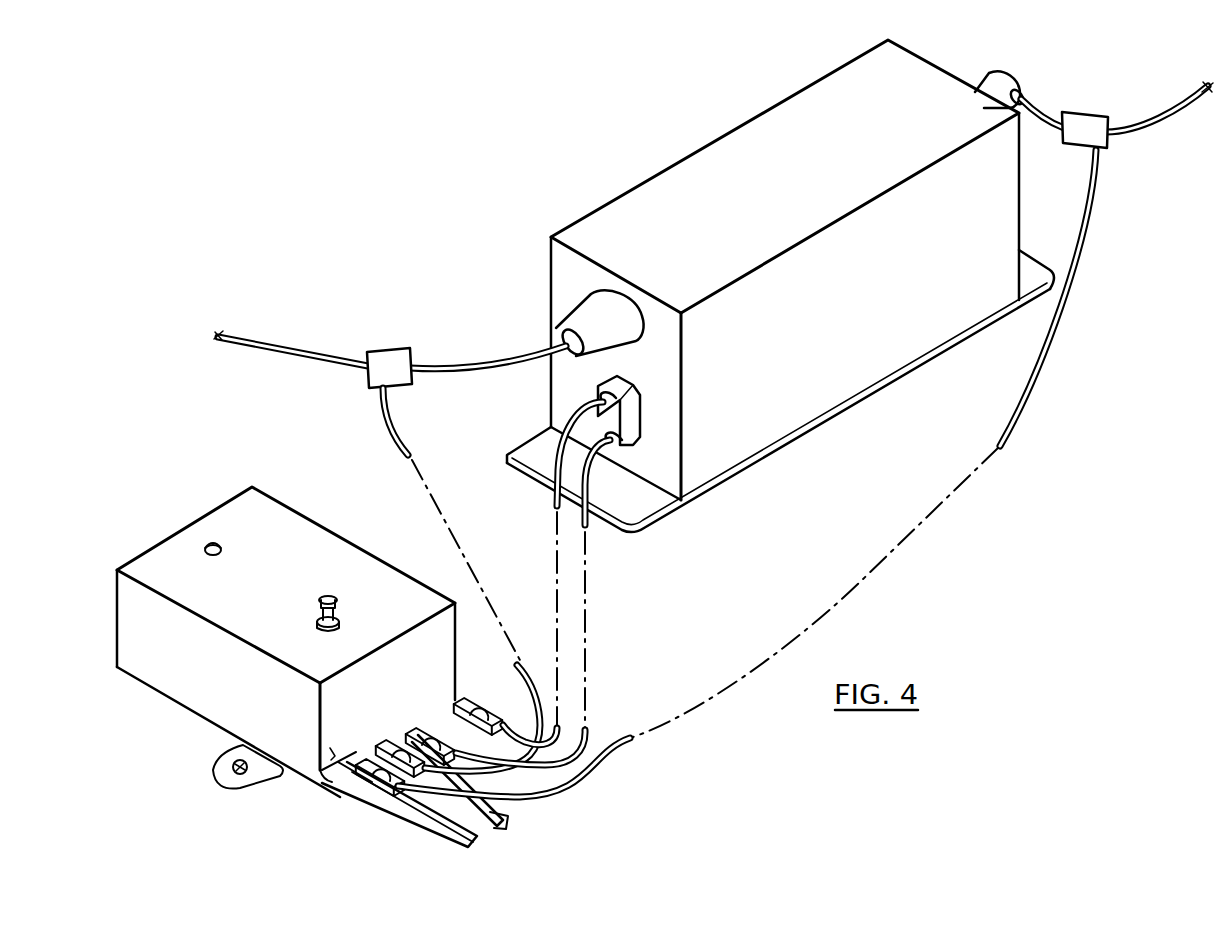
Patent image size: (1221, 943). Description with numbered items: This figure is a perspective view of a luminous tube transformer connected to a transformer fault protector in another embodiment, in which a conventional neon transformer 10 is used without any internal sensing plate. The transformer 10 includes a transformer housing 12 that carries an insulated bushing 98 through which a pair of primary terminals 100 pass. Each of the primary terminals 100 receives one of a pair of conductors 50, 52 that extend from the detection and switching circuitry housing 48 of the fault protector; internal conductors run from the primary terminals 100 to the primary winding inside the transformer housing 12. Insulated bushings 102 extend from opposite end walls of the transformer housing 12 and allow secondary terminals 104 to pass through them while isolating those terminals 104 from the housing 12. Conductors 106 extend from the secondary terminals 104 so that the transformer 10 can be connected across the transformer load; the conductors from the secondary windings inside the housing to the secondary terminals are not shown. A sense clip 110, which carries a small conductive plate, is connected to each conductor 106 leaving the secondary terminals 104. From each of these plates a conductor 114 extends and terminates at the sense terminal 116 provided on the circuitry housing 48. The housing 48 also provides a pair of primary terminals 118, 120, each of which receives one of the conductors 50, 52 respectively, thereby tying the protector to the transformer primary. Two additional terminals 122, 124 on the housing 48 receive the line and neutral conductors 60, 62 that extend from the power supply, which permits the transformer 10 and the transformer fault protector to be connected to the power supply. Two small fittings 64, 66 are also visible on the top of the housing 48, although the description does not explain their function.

The neon transformer 10 is at (645, 126).
The transformer housing 12 is at (885, 347).
The detection and switching circuitry housing 48 is at (166, 682).
The conductor 50 is at (562, 478).
The conductor 52 is at (592, 488).
The line conductor 60 is at (436, 824).
The neutral conductor 62 is at (498, 822).
The indicator cap 64 is at (222, 548).
The mounting bolt 66 is at (338, 601).
The insulated bushing 98 is at (636, 402).
The primary terminals 100 is at (642, 380).
The insulated bushings 102 is at (601, 311).
The secondary terminals 104 is at (562, 347).
The conductors 106 is at (282, 348).
The sense clip 110 is at (385, 378).
The conductor 114 is at (395, 436).
The sense terminal 116 is at (490, 690).
The primary terminal 118 is at (420, 726).
The primary terminal 120 is at (388, 742).
The terminal 122 is at (348, 790).
The terminal 124 is at (368, 752).